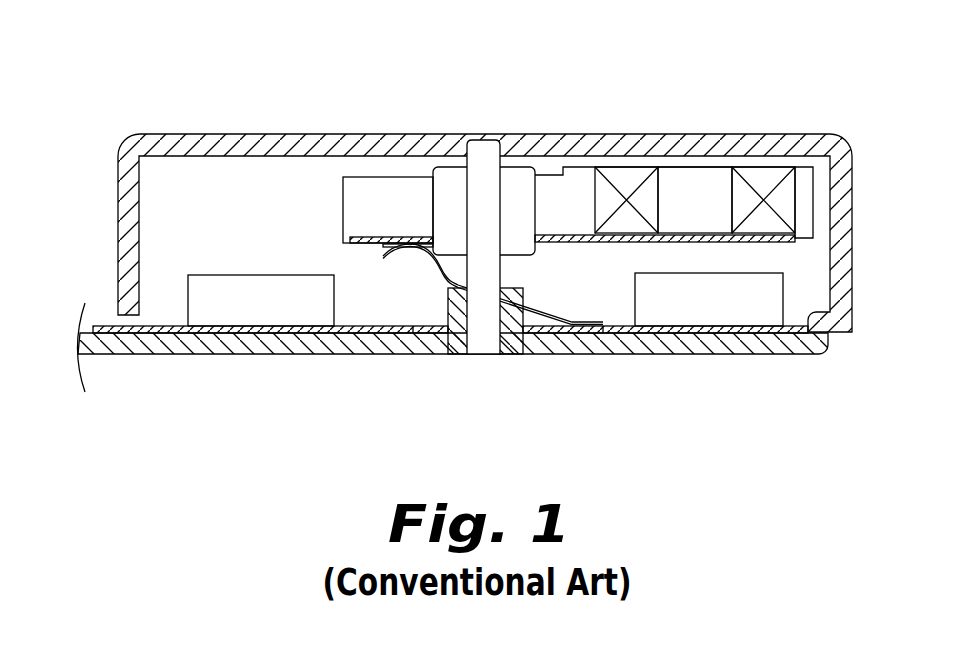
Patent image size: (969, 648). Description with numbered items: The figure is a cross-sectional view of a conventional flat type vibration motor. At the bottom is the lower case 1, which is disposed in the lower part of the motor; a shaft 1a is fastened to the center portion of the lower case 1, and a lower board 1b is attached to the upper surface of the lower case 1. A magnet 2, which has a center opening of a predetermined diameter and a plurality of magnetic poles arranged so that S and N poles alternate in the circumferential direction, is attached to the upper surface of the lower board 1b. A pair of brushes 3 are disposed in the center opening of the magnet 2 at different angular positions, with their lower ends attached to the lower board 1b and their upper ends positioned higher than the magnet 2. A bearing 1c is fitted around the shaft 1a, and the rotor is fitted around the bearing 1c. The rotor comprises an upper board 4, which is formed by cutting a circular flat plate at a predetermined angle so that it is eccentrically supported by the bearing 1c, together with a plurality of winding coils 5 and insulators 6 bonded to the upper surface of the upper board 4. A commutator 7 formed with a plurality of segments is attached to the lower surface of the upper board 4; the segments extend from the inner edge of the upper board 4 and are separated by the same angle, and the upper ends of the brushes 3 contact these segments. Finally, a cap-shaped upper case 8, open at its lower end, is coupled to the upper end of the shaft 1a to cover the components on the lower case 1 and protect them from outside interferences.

The lower case 1 is at (243, 342).
The shaft 1a is at (482, 338).
The lower board 1b is at (357, 330).
The bearing 1c is at (517, 190).
The magnet 2 is at (286, 295).
The brushes 3 is at (392, 255).
The upper board 4 is at (366, 240).
The winding coils 5 is at (622, 175).
The insulators 6 is at (687, 200).
The commutator 7 is at (560, 243).
The upper case 8 is at (380, 140).